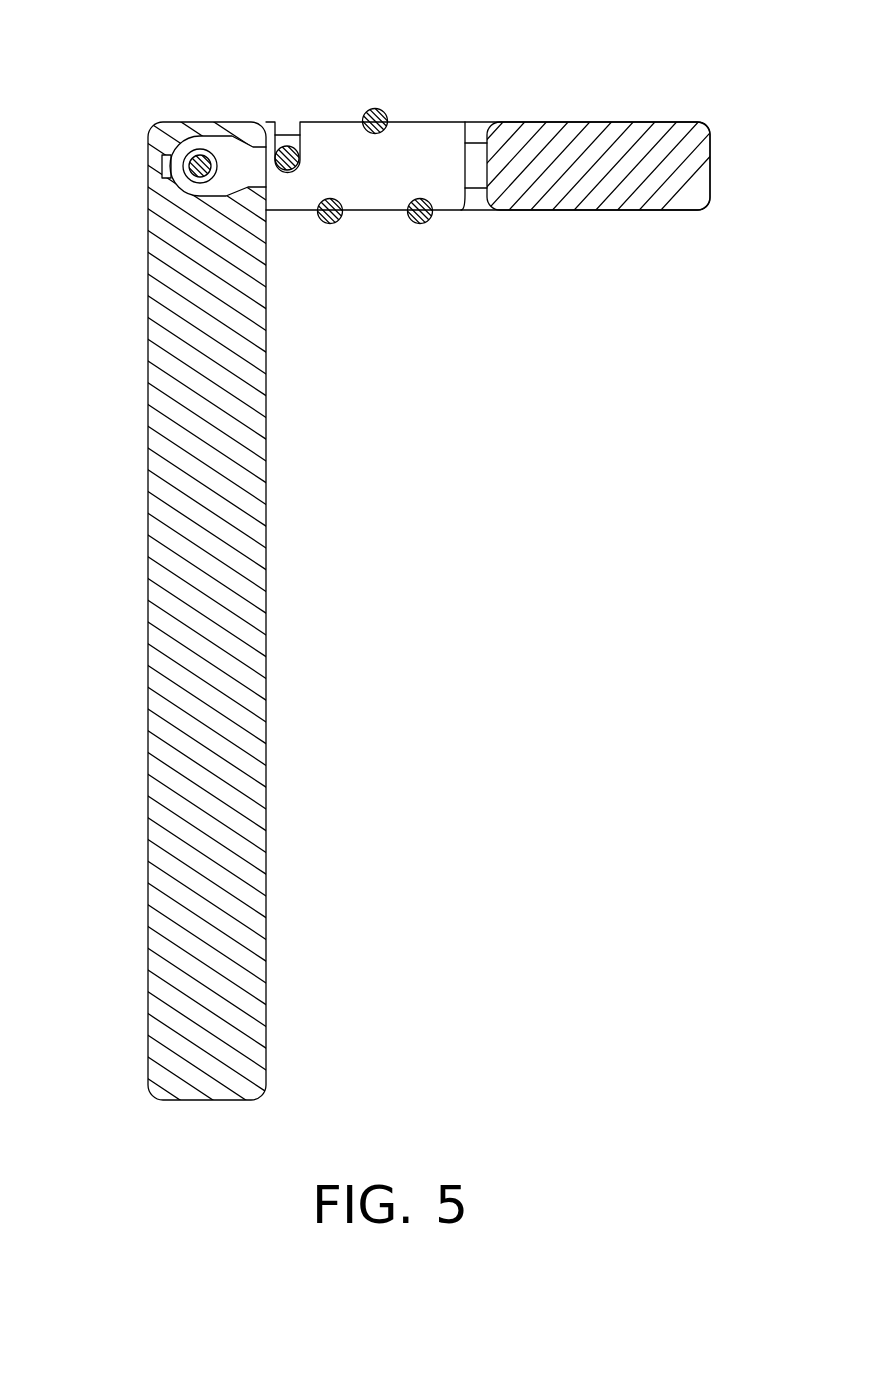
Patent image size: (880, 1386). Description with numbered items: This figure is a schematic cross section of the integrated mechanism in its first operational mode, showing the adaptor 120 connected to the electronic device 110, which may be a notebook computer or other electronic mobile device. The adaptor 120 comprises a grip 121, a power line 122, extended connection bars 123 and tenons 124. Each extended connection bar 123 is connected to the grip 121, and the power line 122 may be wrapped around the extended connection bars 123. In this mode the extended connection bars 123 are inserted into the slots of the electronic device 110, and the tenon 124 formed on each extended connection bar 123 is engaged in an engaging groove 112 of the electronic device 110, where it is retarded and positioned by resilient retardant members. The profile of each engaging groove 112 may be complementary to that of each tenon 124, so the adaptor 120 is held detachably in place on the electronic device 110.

The electronic device 110 is at (281, 989).
The engaging groove 112 is at (162, 164).
The adaptor 120 is at (689, 117).
The grip 121 is at (597, 200).
The power line 122 is at (375, 134).
The extended connection bar 123 is at (425, 137).
The tenon 124 is at (180, 172).